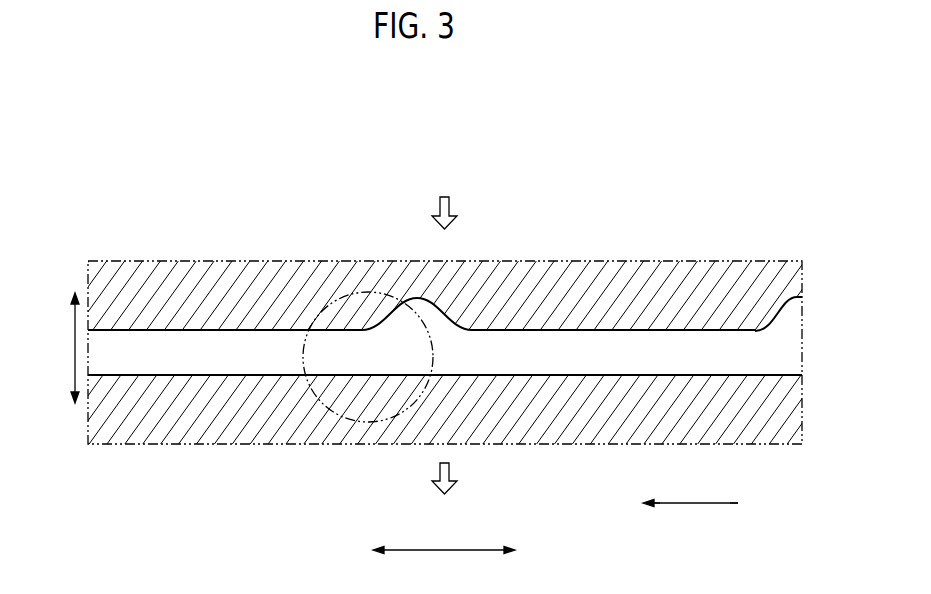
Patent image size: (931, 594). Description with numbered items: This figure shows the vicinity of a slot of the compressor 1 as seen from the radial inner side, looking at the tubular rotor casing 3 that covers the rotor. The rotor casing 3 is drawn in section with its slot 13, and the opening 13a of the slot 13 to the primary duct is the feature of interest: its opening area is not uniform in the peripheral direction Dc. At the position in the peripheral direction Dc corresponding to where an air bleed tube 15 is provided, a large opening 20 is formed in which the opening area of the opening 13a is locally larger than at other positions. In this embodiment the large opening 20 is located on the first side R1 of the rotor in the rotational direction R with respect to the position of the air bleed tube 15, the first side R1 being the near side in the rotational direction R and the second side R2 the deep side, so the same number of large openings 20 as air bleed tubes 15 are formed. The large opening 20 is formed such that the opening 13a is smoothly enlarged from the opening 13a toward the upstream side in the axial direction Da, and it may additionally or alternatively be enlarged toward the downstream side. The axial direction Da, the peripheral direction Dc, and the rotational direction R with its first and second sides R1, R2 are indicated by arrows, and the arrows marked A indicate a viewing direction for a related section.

The compressor 1 is at (640, 214).
The rotor casing 3 is at (264, 280).
The slot 13 is at (773, 371).
The opening 13a is at (715, 332).
The air bleed tube 15 is at (360, 421).
The large opening 20 is at (410, 298).
The axial direction Da is at (88, 318).
The peripheral direction Dc is at (476, 549).
The section A direction A is at (450, 205).
The rotational direction R is at (690, 504).
The first side R1 is at (748, 505).
The second side R2 is at (637, 505).